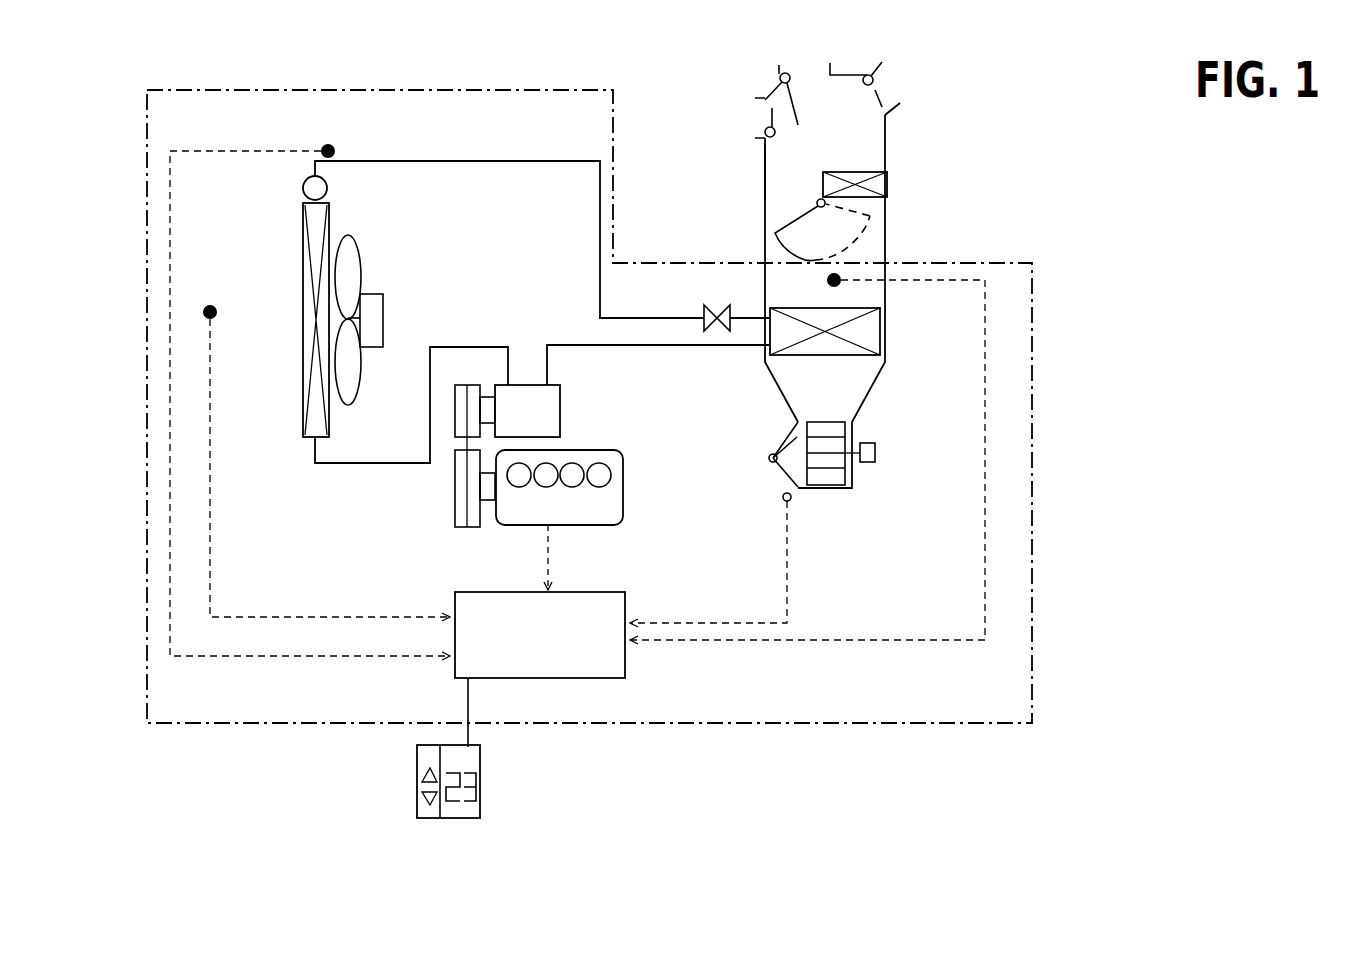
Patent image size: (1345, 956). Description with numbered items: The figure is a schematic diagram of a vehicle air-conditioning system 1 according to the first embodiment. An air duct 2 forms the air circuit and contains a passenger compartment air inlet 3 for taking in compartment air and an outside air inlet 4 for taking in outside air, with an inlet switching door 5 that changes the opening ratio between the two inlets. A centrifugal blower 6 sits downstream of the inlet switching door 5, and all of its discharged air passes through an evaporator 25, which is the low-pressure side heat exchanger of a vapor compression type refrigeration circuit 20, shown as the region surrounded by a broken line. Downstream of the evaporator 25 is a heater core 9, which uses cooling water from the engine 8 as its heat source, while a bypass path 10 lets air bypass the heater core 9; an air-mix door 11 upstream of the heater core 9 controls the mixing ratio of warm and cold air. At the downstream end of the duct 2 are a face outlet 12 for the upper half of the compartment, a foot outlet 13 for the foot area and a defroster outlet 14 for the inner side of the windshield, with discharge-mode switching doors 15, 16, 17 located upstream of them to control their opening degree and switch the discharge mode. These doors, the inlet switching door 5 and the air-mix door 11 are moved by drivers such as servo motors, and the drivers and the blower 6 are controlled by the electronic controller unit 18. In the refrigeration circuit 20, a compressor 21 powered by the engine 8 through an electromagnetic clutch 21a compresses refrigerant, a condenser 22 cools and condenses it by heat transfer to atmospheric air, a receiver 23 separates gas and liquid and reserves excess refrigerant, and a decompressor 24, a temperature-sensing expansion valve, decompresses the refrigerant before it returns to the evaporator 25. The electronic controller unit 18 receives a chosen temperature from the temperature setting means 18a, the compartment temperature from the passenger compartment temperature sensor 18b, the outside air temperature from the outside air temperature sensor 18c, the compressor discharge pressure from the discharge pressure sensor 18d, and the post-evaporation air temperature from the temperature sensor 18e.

The vehicle air-conditioning system 1 is at (938, 224).
The air duct 2 is at (762, 256).
The passenger compartment air inlet 3 is at (780, 475).
The outside air inlet 4 is at (783, 440).
The inlet switching door 5 is at (783, 462).
The centrifugal blower 6 is at (843, 477).
The engine 8 is at (600, 518).
The heater core 9 is at (887, 183).
The bypass path 10 is at (790, 190).
The air-mix door 11 is at (792, 221).
The face outlet 12 is at (812, 72).
The foot outlet 13 is at (893, 77).
The defroster outlet 14 is at (755, 125).
The discharge-mode switching door 15 is at (793, 100).
The discharge-mode switching door 16 is at (887, 95).
The discharge-mode switching door 17 is at (762, 114).
The electronic controller unit (ECU) 18 is at (558, 672).
The temperature setting means 18a is at (480, 797).
The passenger compartment temperature sensor 18b is at (785, 501).
The outside air temperature sensor 18c is at (218, 310).
The discharge pressure sensor 18d is at (328, 143).
The temperature sensor 18e is at (842, 275).
The refrigeration circuit 20 is at (1034, 596).
The compressor 21 is at (560, 408).
The electromagnetic clutch 21a is at (465, 385).
The condenser 22 is at (308, 307).
The receiver 23 is at (303, 188).
The decompressor 24 is at (715, 305).
The evaporator 25 is at (880, 317).